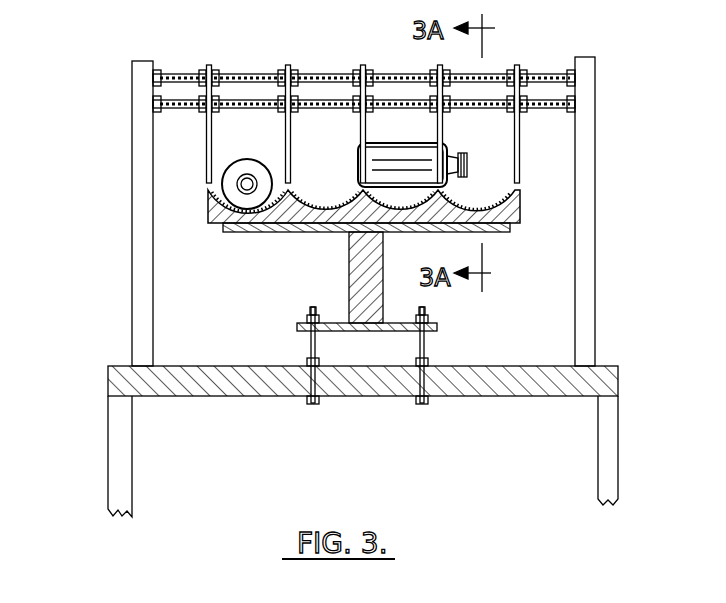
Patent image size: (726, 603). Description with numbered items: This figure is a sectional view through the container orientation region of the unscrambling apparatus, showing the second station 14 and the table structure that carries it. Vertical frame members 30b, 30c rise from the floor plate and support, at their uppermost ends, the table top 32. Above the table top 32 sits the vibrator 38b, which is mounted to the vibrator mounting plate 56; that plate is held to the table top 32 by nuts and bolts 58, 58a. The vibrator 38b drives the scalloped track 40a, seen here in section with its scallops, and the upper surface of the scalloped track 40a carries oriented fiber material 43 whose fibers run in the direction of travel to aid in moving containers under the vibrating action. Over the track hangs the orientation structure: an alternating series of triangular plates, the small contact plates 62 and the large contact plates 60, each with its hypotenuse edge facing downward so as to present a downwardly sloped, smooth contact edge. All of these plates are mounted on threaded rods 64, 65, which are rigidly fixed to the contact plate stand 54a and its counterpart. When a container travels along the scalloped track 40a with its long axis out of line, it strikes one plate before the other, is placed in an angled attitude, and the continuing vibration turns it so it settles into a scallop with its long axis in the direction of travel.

The second station 14 is at (626, 79).
The vertical frame member 30b is at (120, 438).
The vertical frame member 30c is at (612, 449).
The table top 32 is at (463, 397).
The vibrator 38b is at (362, 272).
The scalloped track 40a is at (247, 232).
The oriented fiber material 43 is at (482, 205).
The contact plate stand 54a is at (140, 264).
The vibrator mounting plate 56 is at (385, 331).
The nuts and bolts 58 is at (427, 346).
The nuts and bolts 58a is at (310, 345).
The large contact plate 60 is at (292, 146).
The small contact plate 62 is at (213, 146).
The threaded rod 64 is at (178, 74).
The threaded rod 65 is at (182, 108).